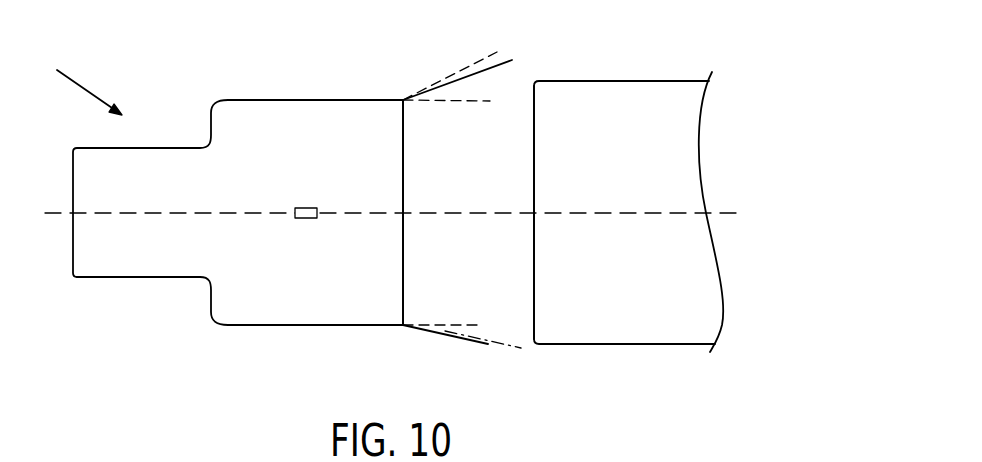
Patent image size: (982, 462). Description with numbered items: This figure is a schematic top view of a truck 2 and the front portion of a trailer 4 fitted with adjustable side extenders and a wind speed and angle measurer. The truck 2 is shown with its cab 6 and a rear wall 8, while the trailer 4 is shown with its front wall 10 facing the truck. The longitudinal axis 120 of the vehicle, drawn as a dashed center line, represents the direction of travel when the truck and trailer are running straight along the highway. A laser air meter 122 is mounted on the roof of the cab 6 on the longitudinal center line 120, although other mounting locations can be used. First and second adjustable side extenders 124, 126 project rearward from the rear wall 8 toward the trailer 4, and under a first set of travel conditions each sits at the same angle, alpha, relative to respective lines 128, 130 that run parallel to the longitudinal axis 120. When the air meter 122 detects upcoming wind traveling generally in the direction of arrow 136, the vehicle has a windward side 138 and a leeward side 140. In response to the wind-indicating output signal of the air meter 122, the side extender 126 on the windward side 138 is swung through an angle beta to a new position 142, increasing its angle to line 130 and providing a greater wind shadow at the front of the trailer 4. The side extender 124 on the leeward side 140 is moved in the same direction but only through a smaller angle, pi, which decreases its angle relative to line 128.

The truck 2 is at (232, 298).
The trailer 4 is at (617, 106).
The cab 6 is at (298, 315).
The rear wall 8 is at (402, 274).
The front wall 10 is at (538, 170).
The longitudinal axis 120 is at (667, 213).
The laser air meter 122 is at (306, 209).
The first adjustable side extender 124 is at (427, 333).
The second adjustable side extender 126 is at (484, 76).
The reference line 128 is at (452, 322).
The reference line 130 is at (482, 102).
The expected wind direction arrow 136 is at (85, 88).
The windward side 138 is at (243, 99).
The leeward side 140 is at (153, 278).
The new position of air deflector 142 is at (463, 63).